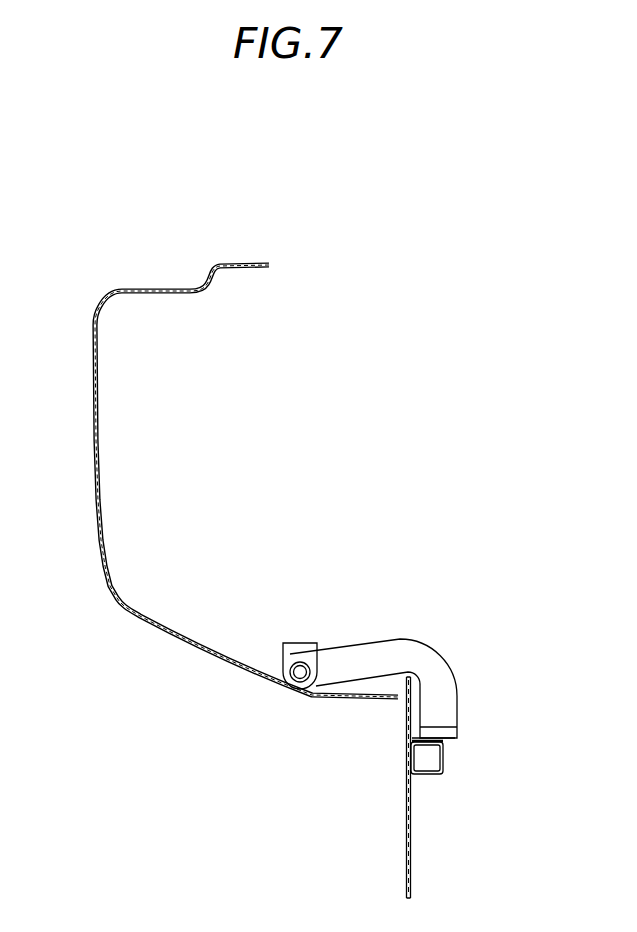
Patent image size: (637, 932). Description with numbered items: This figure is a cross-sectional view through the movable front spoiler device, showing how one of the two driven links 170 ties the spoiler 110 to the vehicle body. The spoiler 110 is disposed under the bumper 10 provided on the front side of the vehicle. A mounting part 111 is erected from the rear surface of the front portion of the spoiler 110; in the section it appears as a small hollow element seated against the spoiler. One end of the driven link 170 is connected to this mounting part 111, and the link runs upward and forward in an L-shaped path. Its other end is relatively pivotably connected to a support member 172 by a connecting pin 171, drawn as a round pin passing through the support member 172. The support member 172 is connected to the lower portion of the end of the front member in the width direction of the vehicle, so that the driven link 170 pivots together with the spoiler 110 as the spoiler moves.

The bumper 10 is at (93, 362).
The spoiler 110 is at (406, 860).
The mounting part 111 is at (443, 743).
The driven link 170 is at (458, 708).
The connecting pin 171 is at (303, 662).
The support member 172 is at (287, 643).